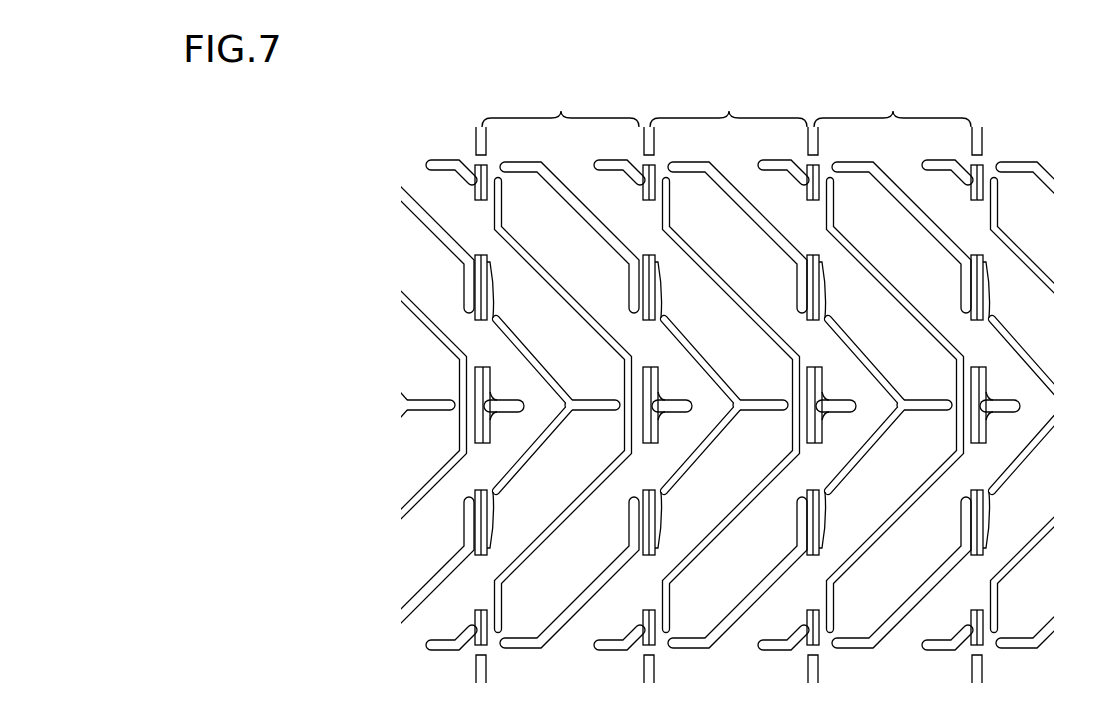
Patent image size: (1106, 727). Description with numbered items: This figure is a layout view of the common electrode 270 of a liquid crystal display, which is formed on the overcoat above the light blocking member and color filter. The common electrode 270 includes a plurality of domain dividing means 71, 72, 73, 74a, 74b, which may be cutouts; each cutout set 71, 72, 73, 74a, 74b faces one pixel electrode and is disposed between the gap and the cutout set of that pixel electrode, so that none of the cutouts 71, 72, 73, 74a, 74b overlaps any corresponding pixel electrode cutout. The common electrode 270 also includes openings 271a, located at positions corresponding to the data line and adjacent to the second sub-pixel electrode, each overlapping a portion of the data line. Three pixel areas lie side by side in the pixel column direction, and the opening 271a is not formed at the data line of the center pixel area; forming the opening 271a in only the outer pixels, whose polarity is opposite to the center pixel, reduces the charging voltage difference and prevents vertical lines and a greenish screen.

The common electrode 270 is at (829, 90).
The opening 271a is at (474, 180).
The domain dividing means 71 is at (503, 423).
The domain dividing means 72 is at (495, 332).
The domain dividing means 73 is at (520, 243).
The domain dividing means 74a is at (586, 202).
The domain dividing means 74b is at (580, 612).